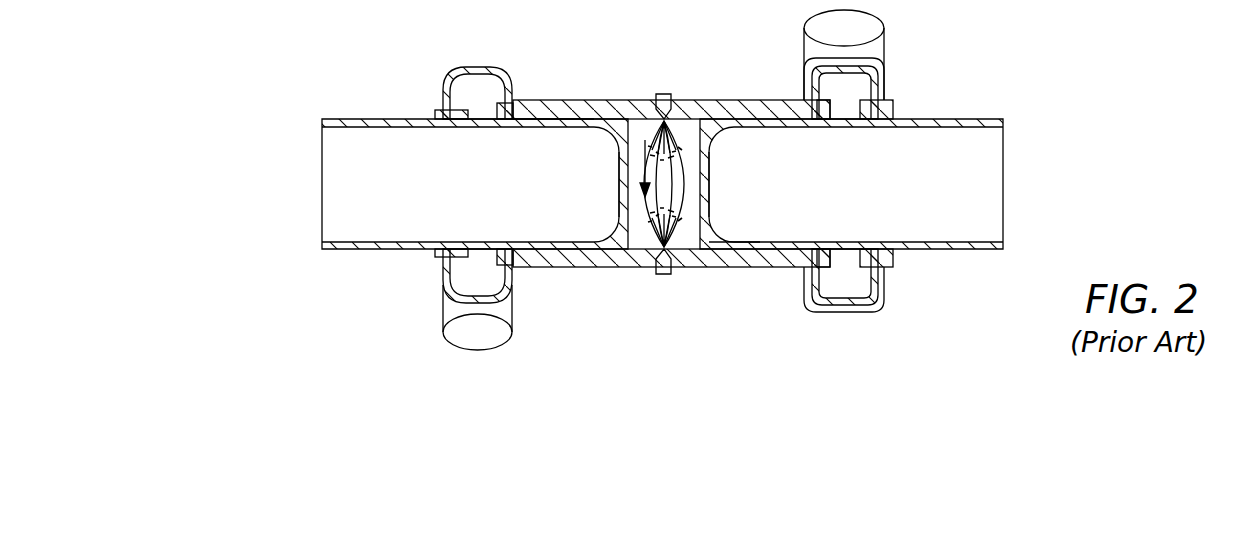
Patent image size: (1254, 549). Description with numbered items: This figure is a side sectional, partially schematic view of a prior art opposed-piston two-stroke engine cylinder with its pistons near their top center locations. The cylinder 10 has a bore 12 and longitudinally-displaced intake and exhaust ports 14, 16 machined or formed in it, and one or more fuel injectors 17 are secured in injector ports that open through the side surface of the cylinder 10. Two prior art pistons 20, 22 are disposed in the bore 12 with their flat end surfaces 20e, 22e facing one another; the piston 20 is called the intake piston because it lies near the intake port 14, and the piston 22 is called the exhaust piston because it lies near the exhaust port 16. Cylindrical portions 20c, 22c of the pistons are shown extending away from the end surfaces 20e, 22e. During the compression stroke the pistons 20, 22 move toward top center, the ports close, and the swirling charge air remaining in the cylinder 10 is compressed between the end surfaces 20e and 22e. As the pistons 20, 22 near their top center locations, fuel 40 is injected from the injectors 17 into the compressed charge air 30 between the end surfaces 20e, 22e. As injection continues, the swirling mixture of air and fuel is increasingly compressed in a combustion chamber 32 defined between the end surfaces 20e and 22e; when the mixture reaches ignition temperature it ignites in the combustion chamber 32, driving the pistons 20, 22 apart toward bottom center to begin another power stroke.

The cylinder 10 is at (725, 100).
The bore 12 is at (688, 130).
The intake port 14 is at (478, 119).
The exhaust port 16 is at (845, 119).
The fuel injector 17 is at (663, 94).
The intake piston 20 is at (478, 177).
The left tube cylindrical portion 20c is at (569, 119).
The end surface of intake piston 20e is at (627, 160).
The exhaust piston 22 is at (841, 216).
The right tube cylindrical portion 22c is at (733, 249).
The end surface of exhaust piston 22e is at (692, 249).
The compressed charge air 30 is at (643, 249).
The combustion chamber 32 is at (692, 128).
The fuel 40 is at (660, 218).